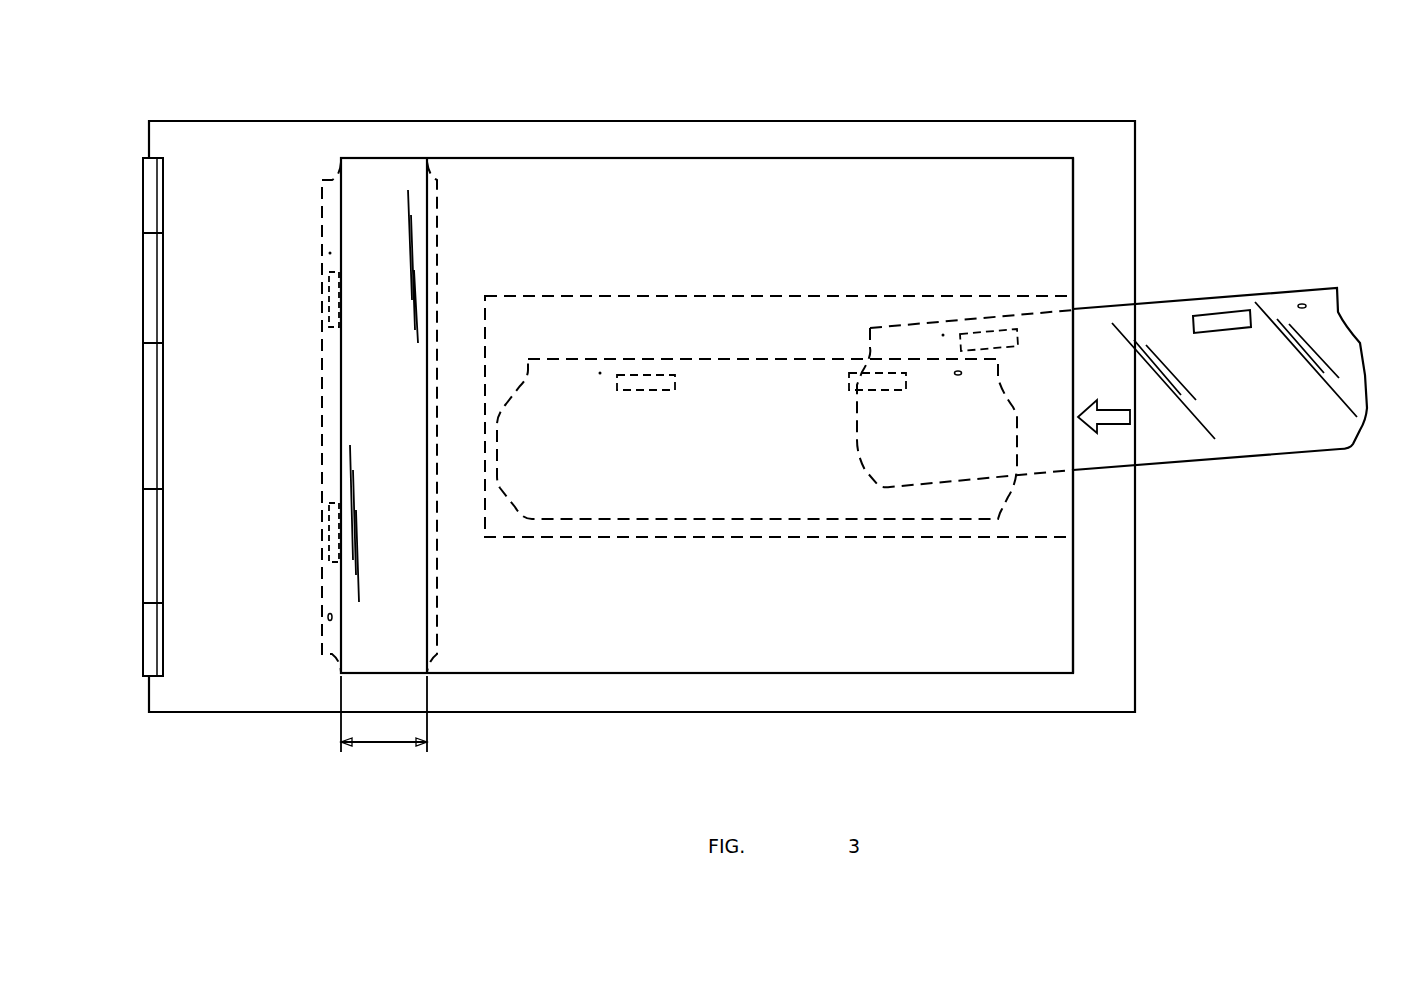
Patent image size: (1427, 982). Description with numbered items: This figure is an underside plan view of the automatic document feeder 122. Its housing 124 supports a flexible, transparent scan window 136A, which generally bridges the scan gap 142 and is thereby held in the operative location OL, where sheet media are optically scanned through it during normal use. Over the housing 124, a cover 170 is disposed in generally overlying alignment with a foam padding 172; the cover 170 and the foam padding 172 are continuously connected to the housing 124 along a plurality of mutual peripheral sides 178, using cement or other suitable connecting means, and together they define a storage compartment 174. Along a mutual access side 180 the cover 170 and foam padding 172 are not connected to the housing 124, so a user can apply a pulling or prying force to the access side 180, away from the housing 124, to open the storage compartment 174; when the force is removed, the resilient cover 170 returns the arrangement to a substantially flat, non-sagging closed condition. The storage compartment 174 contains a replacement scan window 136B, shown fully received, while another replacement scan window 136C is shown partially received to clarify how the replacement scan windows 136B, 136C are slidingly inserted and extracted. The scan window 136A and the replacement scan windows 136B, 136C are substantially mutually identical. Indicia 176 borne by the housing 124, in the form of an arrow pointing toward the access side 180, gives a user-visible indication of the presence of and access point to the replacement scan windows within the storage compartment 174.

The automatic document feeder 122 is at (557, 92).
The housing 124 is at (365, 142).
The operative location OL is at (397, 152).
The scan window 136A is at (365, 387).
The replacement scan window 136B is at (862, 519).
The replacement scan window 136C is at (1318, 290).
The scan gap 142 is at (385, 745).
The cover 170 is at (636, 172).
The foam padding 172 is at (903, 173).
The storage compartment 174 is at (723, 310).
The indicia 176 is at (1115, 412).
The peripheral sides 178 is at (752, 158).
The access side 180 is at (1073, 503).